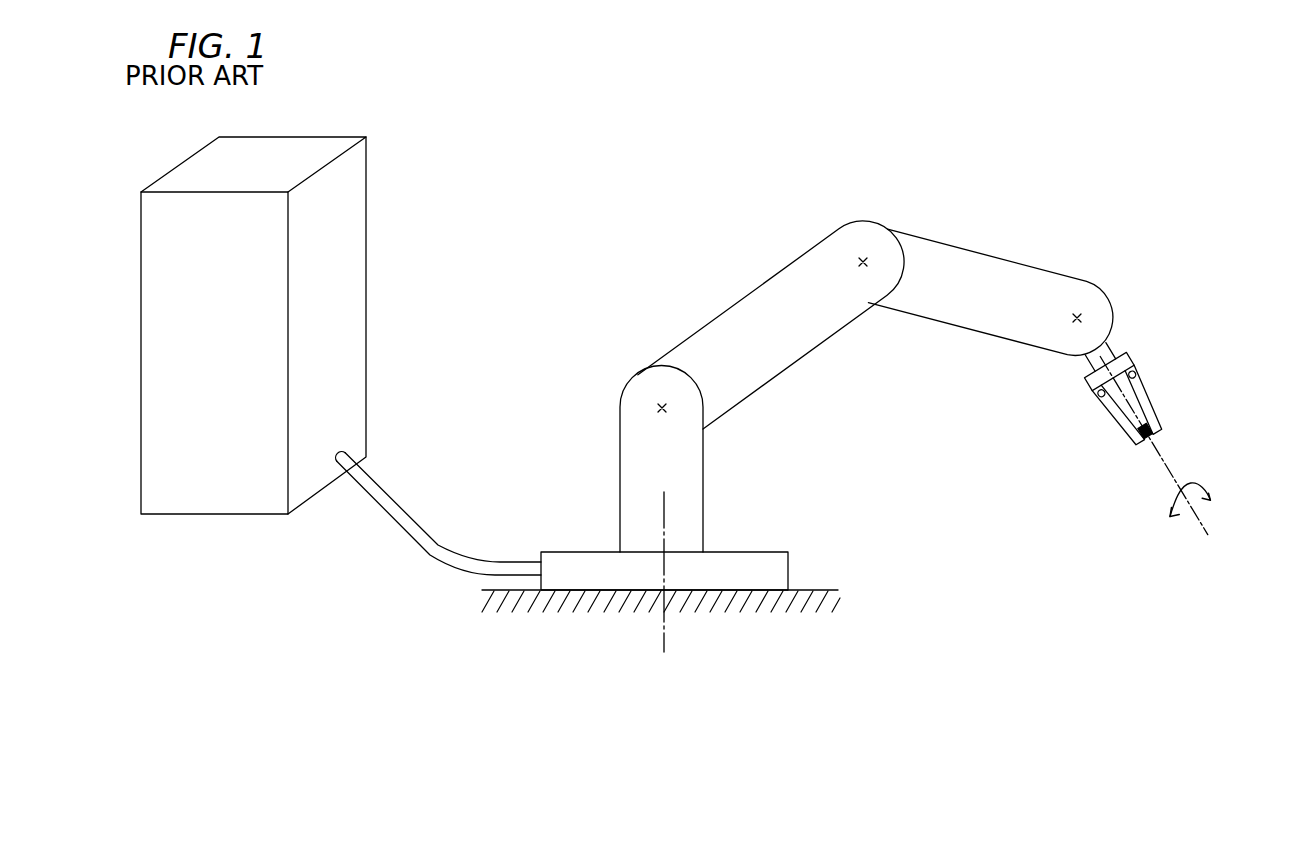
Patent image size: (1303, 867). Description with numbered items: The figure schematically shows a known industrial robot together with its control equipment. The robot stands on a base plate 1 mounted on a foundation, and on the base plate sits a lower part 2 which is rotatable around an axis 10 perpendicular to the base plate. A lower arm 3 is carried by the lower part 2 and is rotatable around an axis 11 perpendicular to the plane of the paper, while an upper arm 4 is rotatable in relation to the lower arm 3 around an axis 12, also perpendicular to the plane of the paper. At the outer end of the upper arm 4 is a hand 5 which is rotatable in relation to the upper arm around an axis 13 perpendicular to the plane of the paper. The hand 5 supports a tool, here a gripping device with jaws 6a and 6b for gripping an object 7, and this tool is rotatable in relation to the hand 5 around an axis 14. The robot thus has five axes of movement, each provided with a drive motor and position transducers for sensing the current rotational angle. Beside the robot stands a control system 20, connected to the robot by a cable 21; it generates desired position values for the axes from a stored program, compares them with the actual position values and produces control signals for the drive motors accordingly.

The base plate 1 is at (589, 580).
The lower part 2 is at (694, 467).
The lower arm 3 is at (802, 337).
The upper arm 4 is at (990, 316).
The hand 5 is at (1108, 348).
The jaw 6a is at (1145, 395).
The jaw 6b is at (1112, 413).
The object 7 is at (1153, 434).
The axis 10 is at (664, 642).
The axis 11 is at (656, 408).
The axis 12 is at (864, 258).
The axis 13 is at (1080, 314).
The axis 14 is at (1210, 527).
The control system 20 is at (222, 497).
The cable 21 is at (412, 502).